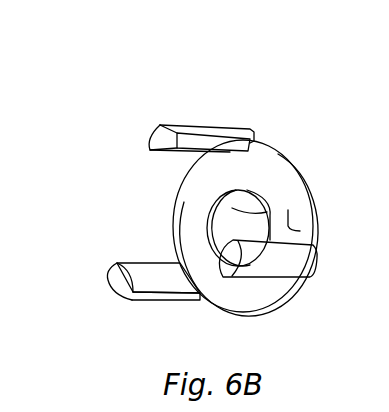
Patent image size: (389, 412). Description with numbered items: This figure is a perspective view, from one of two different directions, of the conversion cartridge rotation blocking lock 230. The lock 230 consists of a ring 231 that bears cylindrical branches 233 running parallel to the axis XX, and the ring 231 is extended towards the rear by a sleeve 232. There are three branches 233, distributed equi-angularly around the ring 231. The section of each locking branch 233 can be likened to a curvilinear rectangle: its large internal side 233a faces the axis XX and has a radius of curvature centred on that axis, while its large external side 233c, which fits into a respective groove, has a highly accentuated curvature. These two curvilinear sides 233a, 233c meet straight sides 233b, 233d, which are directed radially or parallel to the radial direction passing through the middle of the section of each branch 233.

The lock 230 is at (170, 82).
The ring 231 is at (302, 231).
The sleeve 232 is at (267, 208).
The cylindrical branch 233 is at (207, 130).
The large internal side 233a is at (108, 290).
The straight side 233b is at (115, 266).
The large external side 233c is at (118, 262).
The straight side 233d is at (132, 300).